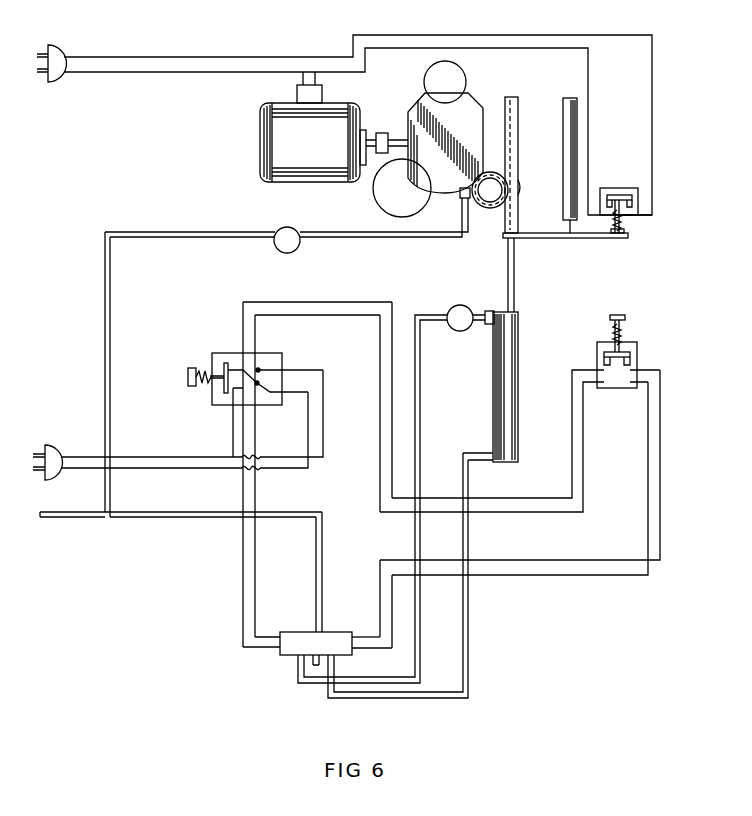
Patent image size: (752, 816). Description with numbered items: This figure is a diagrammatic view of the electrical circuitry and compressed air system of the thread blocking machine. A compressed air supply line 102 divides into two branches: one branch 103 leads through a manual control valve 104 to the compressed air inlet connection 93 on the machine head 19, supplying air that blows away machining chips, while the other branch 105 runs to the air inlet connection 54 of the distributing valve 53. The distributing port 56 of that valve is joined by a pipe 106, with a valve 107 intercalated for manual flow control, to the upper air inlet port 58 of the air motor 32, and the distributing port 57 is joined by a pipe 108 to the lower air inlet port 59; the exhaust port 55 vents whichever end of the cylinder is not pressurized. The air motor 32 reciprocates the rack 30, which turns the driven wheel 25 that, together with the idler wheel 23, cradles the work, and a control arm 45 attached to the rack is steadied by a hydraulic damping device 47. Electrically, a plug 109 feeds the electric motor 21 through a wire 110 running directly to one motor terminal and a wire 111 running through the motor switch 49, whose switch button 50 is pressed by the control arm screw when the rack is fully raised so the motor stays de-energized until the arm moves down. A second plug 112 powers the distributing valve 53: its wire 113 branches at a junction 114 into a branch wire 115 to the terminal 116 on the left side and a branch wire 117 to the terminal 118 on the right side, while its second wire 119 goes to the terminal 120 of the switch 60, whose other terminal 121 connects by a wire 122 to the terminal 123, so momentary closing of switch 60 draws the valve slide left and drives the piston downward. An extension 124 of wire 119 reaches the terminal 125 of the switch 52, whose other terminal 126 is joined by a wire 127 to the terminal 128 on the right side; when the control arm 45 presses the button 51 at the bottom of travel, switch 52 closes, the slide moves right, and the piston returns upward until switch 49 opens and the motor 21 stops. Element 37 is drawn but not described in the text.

The machine head 19 is at (473, 115).
The electric motor 21 is at (288, 135).
The idler wheel 23 is at (378, 194).
The driven wheel 25 is at (492, 218).
The rack 30 is at (514, 113).
The air motor 32 is at (506, 358).
The pulley 37 is at (424, 81).
The control arm 45 is at (548, 239).
The hydraulic damping device 47 is at (578, 151).
The motor switch 49 is at (616, 188).
The switch button 50 is at (628, 234).
The button 51 is at (623, 318).
The switch 52 is at (638, 353).
The distributing valve 53 is at (279, 664).
The air inlet connection 54 is at (323, 629).
The exhaust port 55 is at (316, 666).
The distributing port 56 is at (298, 660).
The distributing port 57 is at (336, 662).
The upper air inlet port 58 is at (490, 311).
The lower air inlet port 59 is at (490, 455).
The switch 60 is at (213, 405).
The compressed air inlet connection 93 is at (470, 200).
The compressed air supply line 102 is at (66, 519).
The branch of air supply line 103 is at (105, 346).
The manual control valve 104 is at (274, 247).
The branch of air supply line 105 is at (178, 521).
The pipe 106 is at (416, 600).
The valve 107 is at (459, 332).
The pipe 108 is at (469, 650).
The electrical plug 109 is at (58, 52).
The wire 110 is at (138, 73).
The wire 111 is at (167, 57).
The electrical plug 112 is at (56, 449).
The wire 113 is at (163, 469).
The junction 114 is at (262, 369).
The branch wire 115 is at (256, 553).
The terminal 116 is at (279, 630).
The branch wire 117 is at (346, 318).
The terminal 118 is at (358, 646).
The second wire 119 is at (136, 457).
The terminal 120 is at (236, 366).
The terminal 121 is at (234, 406).
The wire 122 is at (243, 576).
The terminal 123 is at (277, 634).
The extension 124 is at (306, 303).
The terminal 125 is at (604, 361).
The terminal 126 is at (649, 379).
The wire 127 is at (661, 445).
The terminal 128 is at (355, 636).